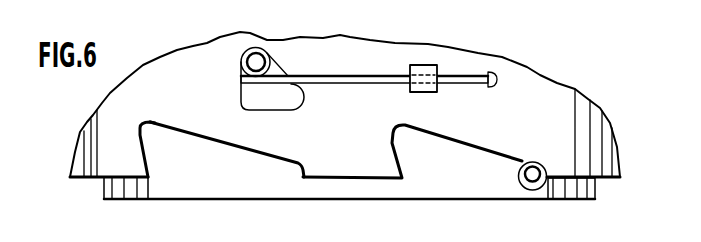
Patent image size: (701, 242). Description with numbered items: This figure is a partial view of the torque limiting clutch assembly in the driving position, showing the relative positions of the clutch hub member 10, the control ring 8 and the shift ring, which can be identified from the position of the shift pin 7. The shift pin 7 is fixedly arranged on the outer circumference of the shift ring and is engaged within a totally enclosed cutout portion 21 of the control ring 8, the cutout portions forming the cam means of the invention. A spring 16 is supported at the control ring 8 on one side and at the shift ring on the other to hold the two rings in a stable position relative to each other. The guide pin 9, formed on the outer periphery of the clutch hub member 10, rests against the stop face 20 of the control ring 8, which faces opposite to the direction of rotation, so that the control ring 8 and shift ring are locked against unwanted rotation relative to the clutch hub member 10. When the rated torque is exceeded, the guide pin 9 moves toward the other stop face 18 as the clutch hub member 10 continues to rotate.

The shift pin 7 is at (254, 52).
The control ring 8 is at (360, 50).
The guide pin 9 is at (528, 160).
The clutch hub member 10 is at (581, 192).
The spring 16 is at (385, 77).
The stop face 18 is at (142, 158).
The stop face 20 is at (298, 172).
The cutout portion 21 is at (273, 63).